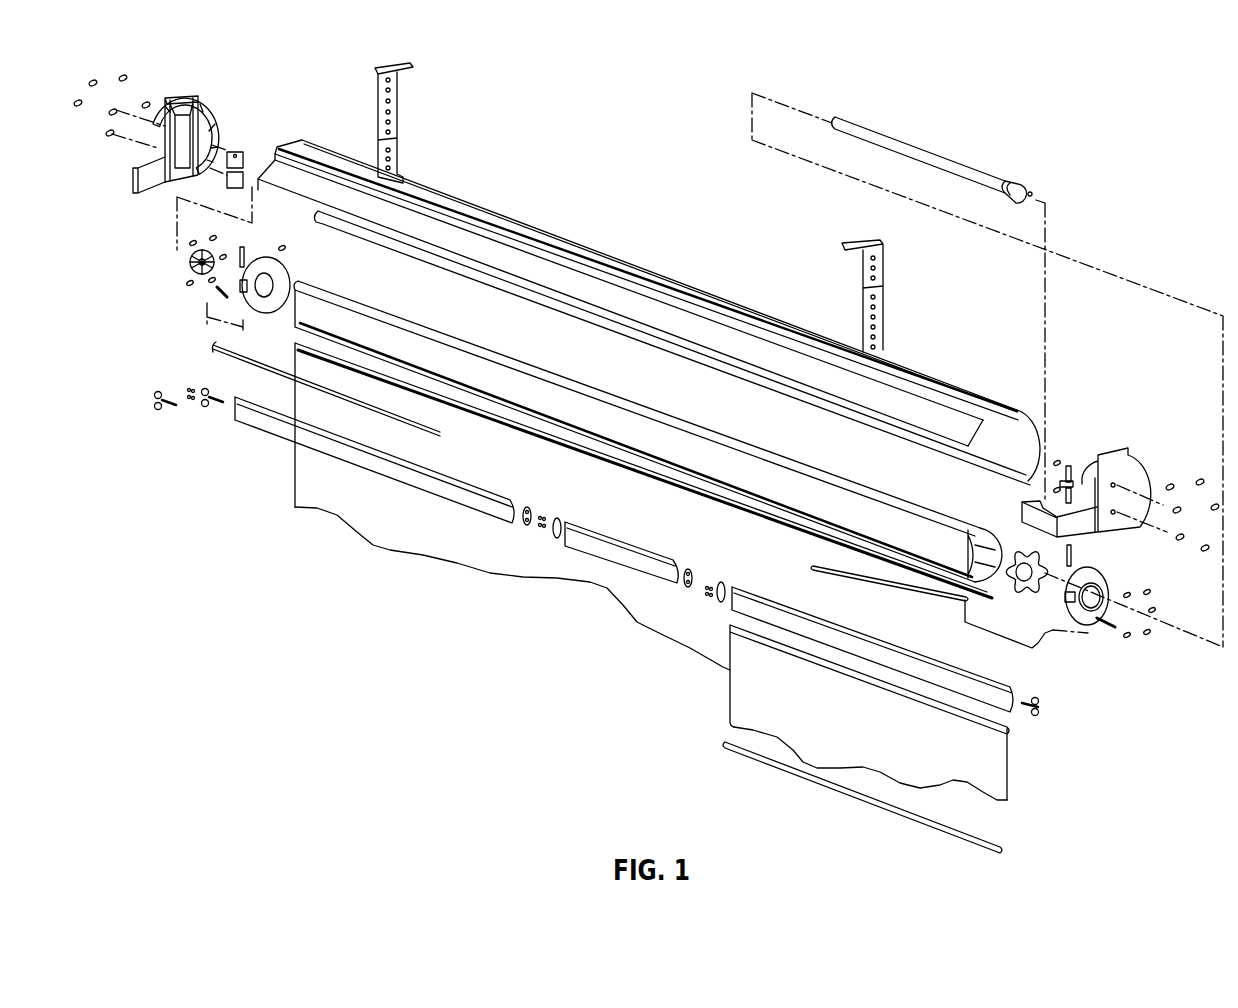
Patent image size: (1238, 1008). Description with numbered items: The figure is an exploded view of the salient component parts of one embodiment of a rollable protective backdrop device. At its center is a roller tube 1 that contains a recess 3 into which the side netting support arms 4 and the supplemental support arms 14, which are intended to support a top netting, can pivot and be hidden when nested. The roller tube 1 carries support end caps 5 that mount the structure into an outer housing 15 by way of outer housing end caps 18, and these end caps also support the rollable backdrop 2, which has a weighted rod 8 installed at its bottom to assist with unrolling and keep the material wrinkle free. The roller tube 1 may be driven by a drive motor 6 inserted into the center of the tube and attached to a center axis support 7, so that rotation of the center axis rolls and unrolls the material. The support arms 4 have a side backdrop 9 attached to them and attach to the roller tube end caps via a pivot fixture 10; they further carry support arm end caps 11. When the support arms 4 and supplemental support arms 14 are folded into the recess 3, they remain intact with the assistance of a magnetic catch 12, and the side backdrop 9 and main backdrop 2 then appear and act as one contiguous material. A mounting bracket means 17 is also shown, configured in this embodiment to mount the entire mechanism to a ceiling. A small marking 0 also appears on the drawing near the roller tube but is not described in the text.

The opening 0 is at (730, 473).
The roller tube 1 is at (538, 358).
The backdrop 2 is at (296, 500).
The recess 3 is at (603, 408).
The support arms 4 is at (284, 440).
The support end caps 5 is at (289, 265).
The drive motor 6 is at (946, 158).
The center axis support 7 is at (189, 262).
The weighted rod 8 is at (897, 813).
The side backdrop 9 is at (1010, 773).
The pivot fixture 10 is at (210, 410).
The support arm end caps 11 is at (523, 500).
The magnetic catch 12 is at (724, 554).
The supplemental support arms 14 is at (204, 350).
The outer housing 15 is at (598, 250).
The mounting bracket means 17 is at (842, 249).
The outer housing end caps 18 is at (220, 117).